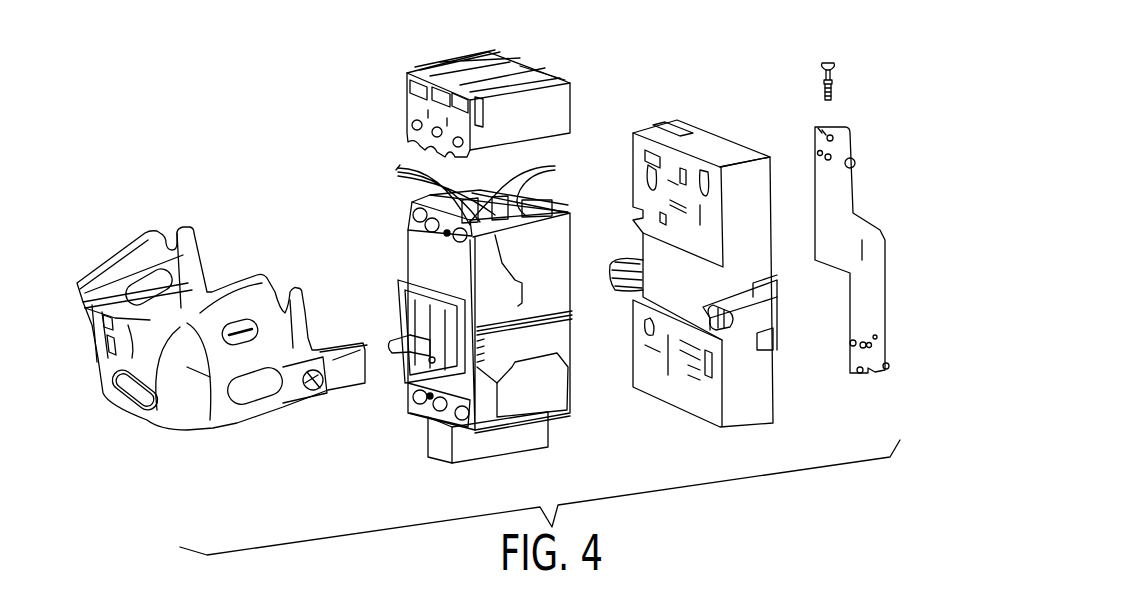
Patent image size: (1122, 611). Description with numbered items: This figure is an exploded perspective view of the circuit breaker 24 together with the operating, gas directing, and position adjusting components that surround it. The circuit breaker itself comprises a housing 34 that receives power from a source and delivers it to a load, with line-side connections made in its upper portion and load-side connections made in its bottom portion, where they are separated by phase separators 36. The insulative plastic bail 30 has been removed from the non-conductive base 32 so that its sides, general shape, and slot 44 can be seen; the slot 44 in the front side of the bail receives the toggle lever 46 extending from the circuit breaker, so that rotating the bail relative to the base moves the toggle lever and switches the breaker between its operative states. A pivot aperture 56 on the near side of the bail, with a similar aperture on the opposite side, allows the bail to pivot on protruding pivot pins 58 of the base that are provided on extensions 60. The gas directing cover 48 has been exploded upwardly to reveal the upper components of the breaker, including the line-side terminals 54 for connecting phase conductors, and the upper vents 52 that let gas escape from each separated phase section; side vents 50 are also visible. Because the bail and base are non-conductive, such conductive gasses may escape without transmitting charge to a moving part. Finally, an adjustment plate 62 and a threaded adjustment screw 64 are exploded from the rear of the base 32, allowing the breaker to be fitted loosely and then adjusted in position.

The circuit breaker 24 is at (386, 412).
The bail 30 is at (228, 410).
The base 32 is at (757, 190).
The housing 34 is at (552, 264).
The phase separators 36 is at (465, 450).
The slot 44 is at (143, 393).
The toggle lever 46 is at (398, 345).
The gas directing cover 48 is at (552, 110).
The side vents 50 is at (522, 300).
The upper vents 52 is at (432, 192).
The line-side terminals 54 is at (526, 191).
The pivot aperture 56 is at (320, 392).
The pivot pins 58 is at (735, 325).
The extensions 60 is at (760, 322).
The adjustment plate 62 is at (838, 200).
The threaded adjustment screw 64 is at (835, 72).